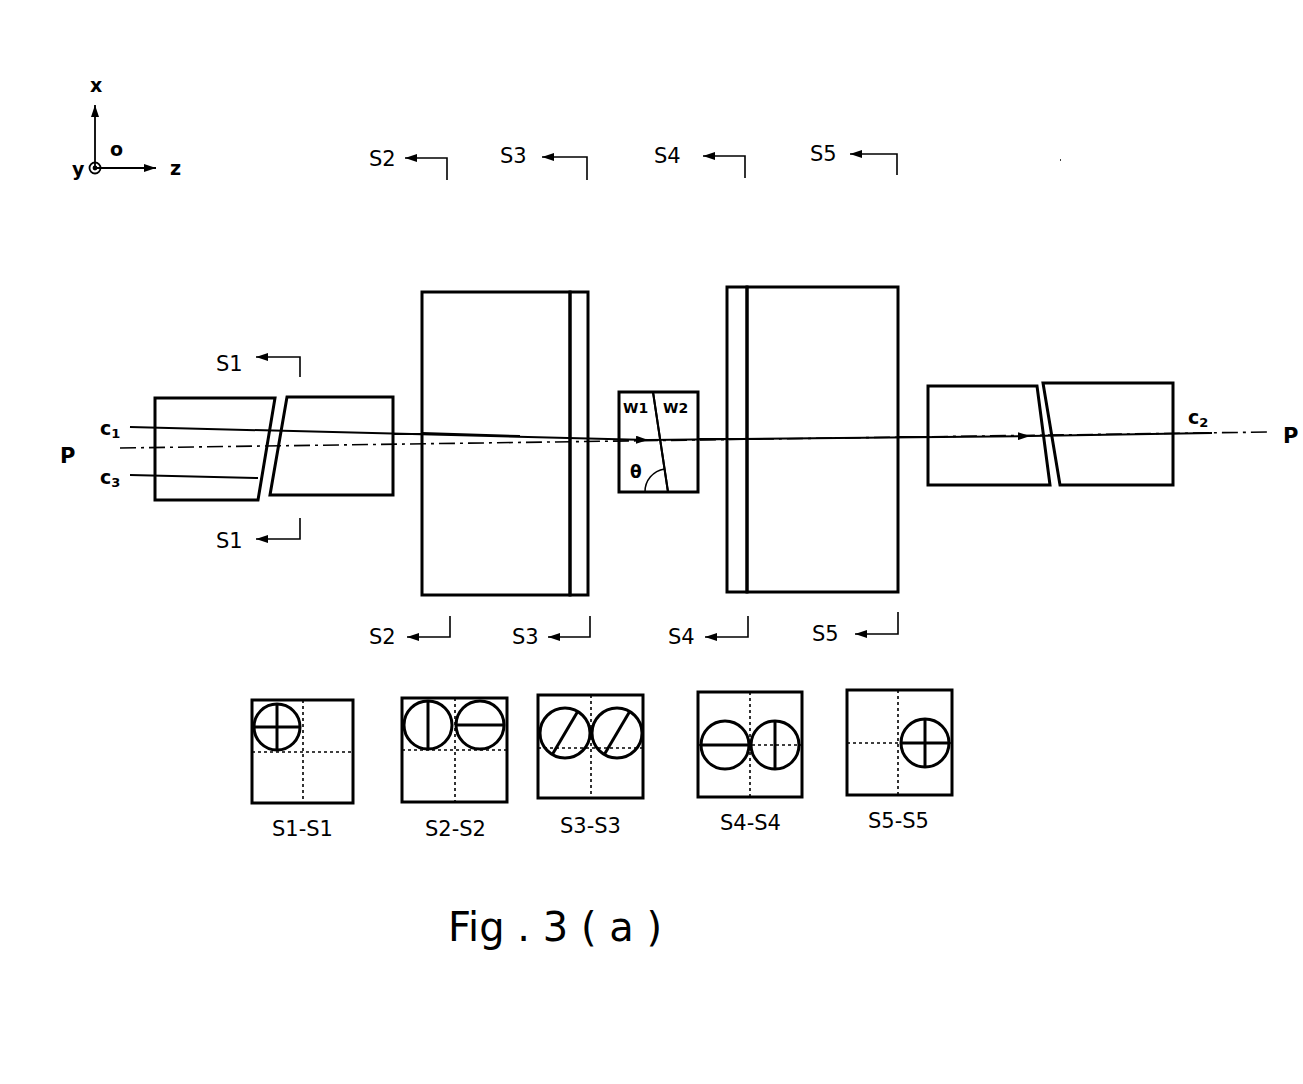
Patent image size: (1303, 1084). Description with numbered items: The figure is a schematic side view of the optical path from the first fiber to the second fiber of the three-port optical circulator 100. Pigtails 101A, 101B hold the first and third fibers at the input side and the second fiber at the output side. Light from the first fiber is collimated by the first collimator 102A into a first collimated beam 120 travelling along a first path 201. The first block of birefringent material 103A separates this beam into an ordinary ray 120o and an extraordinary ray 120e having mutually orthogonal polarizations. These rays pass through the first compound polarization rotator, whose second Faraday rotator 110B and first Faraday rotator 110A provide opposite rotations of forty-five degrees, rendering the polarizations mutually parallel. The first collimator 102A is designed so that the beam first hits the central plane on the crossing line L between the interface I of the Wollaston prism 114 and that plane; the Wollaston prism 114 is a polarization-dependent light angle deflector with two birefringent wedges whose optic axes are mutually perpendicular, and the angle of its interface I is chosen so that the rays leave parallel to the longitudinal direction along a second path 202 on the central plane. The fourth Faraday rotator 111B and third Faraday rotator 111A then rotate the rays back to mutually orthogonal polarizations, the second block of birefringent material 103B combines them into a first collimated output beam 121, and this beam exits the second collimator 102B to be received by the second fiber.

The optical circulator 100 is at (1078, 143).
The pigtail 101A is at (193, 398).
The pigtail 101B is at (1100, 383).
The first collimator 102A is at (340, 397).
The second collimator 102B is at (980, 386).
The first block of birefringent material 103A is at (487, 292).
The second block of birefringent material 103B is at (848, 287).
The first Faraday rotator 110A is at (598, 398).
The second Faraday rotator 110B is at (582, 300).
The third Faraday rotator 111A is at (776, 399).
The fourth Faraday rotator 111B is at (728, 300).
The Wollaston prism 114 is at (619, 492).
The first collimated beam 120 is at (408, 428).
The ordinary ray 120o is at (389, 413).
The extraordinary ray 120e is at (505, 432).
The first collimated output beam 121 is at (913, 440).
The first path 201 is at (468, 433).
The second path 202 is at (717, 465).
The crossing line L is at (661, 447).
The interface I is at (657, 384).